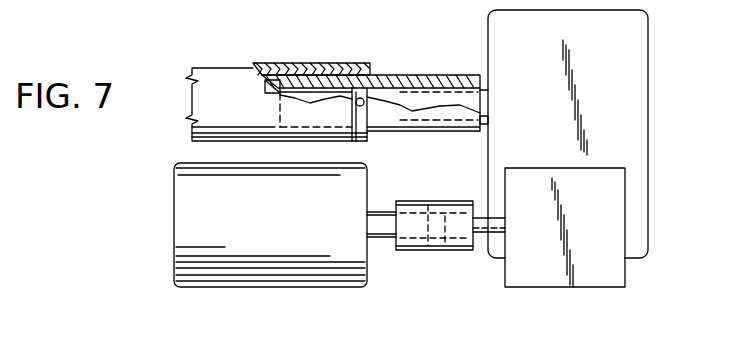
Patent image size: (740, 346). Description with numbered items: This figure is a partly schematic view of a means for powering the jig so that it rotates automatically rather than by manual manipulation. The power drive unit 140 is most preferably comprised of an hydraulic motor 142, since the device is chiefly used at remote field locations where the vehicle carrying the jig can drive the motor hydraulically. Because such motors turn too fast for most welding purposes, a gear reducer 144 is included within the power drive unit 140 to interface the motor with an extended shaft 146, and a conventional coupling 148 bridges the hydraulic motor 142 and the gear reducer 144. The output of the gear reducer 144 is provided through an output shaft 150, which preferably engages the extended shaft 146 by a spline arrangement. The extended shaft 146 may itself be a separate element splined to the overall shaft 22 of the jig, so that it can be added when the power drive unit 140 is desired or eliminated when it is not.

The shaft 22 is at (224, 60).
The power drive unit 140 is at (163, 205).
The hydraulic motor 142 is at (292, 229).
The gear reducer 144 is at (555, 104).
The extended shaft 146 is at (397, 78).
The coupling 148 is at (428, 200).
The output shaft 150 is at (448, 98).